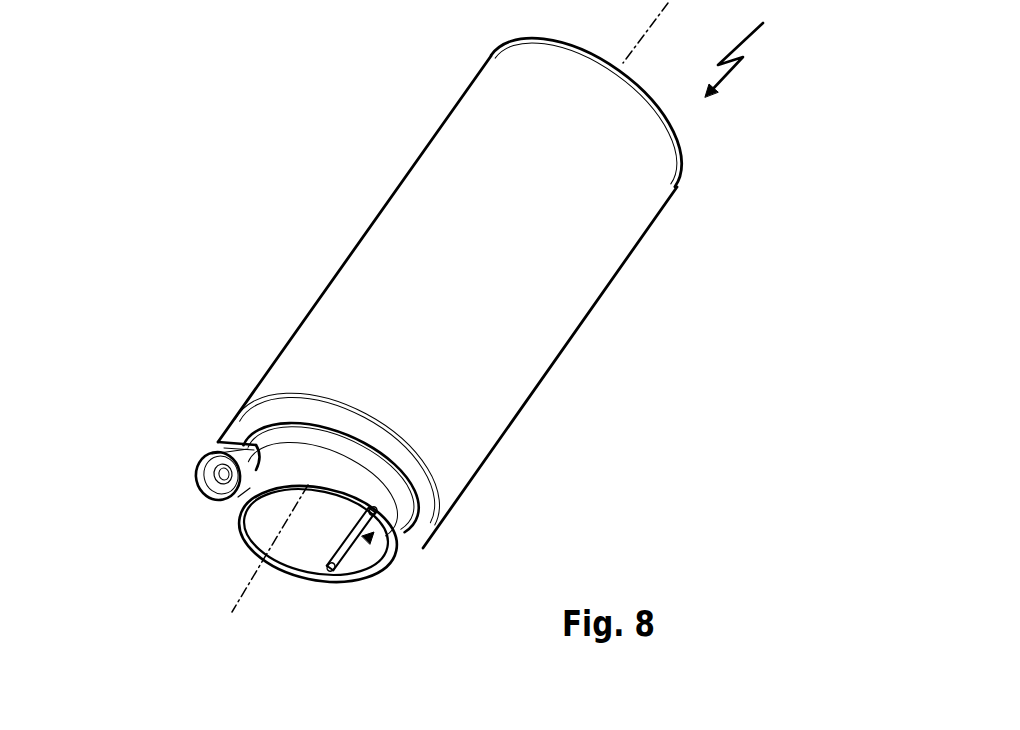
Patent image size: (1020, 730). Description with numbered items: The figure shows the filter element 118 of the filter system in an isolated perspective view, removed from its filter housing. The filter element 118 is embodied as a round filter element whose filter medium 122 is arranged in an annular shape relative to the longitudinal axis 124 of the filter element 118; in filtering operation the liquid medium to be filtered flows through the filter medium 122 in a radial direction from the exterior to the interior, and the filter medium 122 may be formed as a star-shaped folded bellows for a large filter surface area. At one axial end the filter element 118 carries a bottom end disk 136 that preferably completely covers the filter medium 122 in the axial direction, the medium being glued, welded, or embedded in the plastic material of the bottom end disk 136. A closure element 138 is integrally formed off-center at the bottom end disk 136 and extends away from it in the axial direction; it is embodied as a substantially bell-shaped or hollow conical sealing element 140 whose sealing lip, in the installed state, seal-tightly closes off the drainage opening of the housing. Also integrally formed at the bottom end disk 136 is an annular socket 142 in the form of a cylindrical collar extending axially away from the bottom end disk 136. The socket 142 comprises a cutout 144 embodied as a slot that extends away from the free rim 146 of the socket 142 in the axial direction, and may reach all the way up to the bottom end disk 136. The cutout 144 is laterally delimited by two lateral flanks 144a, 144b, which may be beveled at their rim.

The filter element 118 is at (758, 52).
The filter medium 122 is at (633, 248).
The longitudinal axis 124 is at (660, 4).
The bottom end disk 136 is at (400, 538).
The closure element 138 is at (197, 473).
The sealing element 140 is at (203, 495).
The socket 142 is at (262, 524).
The cutout 144 is at (370, 539).
The lateral flank 144a is at (380, 530).
The lateral flank 144b is at (378, 556).
The free rim 146 is at (280, 570).